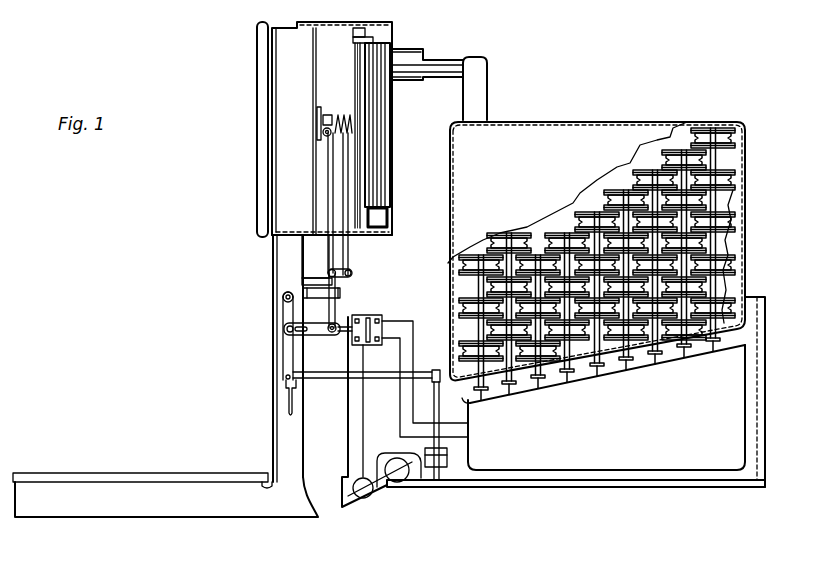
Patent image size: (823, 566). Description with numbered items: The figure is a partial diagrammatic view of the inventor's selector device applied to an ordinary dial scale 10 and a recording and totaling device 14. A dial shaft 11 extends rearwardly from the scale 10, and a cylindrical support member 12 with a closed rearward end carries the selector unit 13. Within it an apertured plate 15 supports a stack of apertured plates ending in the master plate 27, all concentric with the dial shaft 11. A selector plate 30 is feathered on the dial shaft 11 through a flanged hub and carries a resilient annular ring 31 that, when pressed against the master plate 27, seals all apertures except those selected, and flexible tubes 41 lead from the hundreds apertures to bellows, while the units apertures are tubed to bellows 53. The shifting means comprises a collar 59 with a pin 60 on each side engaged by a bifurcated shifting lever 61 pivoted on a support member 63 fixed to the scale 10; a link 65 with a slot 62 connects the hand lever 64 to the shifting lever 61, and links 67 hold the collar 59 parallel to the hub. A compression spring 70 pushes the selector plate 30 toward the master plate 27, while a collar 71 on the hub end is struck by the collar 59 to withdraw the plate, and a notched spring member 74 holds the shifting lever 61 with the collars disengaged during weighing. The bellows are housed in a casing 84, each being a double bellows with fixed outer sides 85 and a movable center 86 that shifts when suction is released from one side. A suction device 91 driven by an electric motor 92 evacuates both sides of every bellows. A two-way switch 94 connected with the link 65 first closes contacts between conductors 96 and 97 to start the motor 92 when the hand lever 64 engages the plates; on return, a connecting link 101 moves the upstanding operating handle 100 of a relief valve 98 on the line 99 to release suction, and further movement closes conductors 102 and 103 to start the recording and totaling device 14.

The scale 10 is at (122, 432).
The dial shaft 11 is at (365, 148).
The support member 12 is at (387, 23).
The selector unit 13 is at (383, 224).
The recording and totaling device 14 is at (462, 458).
The apertured plate 15 is at (387, 42).
The master plate 27 is at (357, 238).
The selector plate 30 is at (352, 52).
The annular ring 31 is at (358, 197).
The flexible tube 41 is at (412, 85).
The bellows 53 is at (500, 233).
The collar 59 is at (332, 112).
The pin 60 is at (323, 112).
The shifting lever 61 is at (328, 175).
The slot 62 is at (283, 310).
The support member 63 is at (317, 262).
The hand lever 64 is at (290, 408).
The link 65 is at (313, 335).
The link 67 is at (350, 270).
The compression spring 70 is at (340, 113).
The collar 71 is at (315, 107).
The notched spring member 74 is at (303, 283).
The casing 84 is at (697, 122).
The fixed outer side 85 is at (459, 258).
The movable center 86 is at (459, 284).
The suction device 91 is at (417, 480).
The electric motor 92 is at (370, 498).
The two-way switch 94 is at (372, 347).
The conductor 96 is at (348, 408).
The conductor 97 is at (363, 430).
The valve 98 is at (450, 472).
The line 99 is at (578, 490).
The operating handle 100 is at (517, 403).
The connecting link 101 is at (340, 376).
The conductor 102 is at (453, 440).
The conductor 103 is at (425, 422).